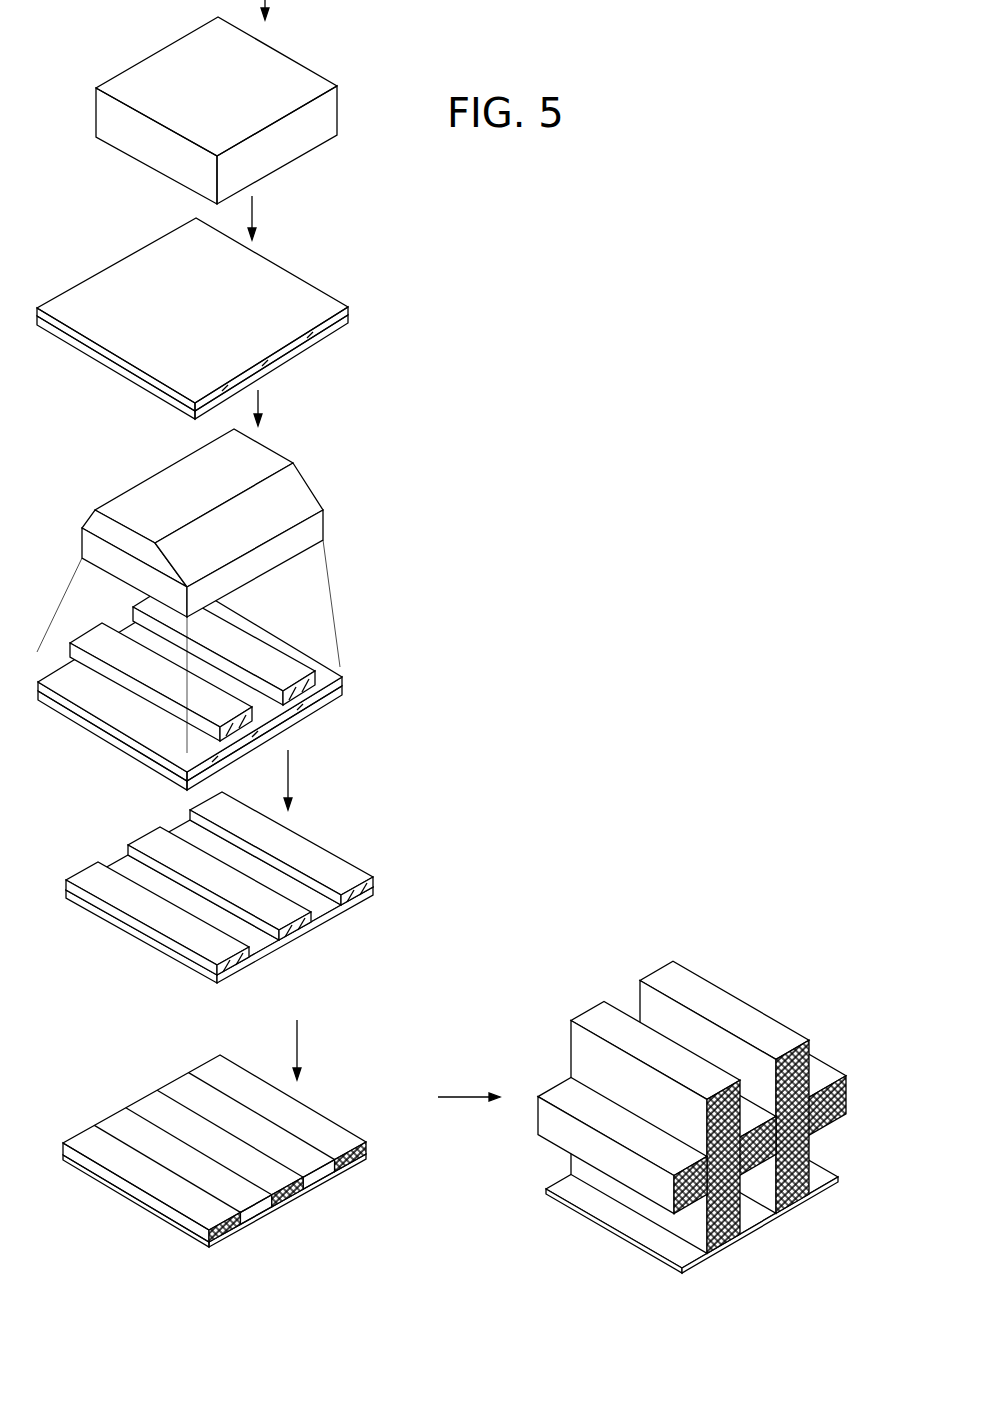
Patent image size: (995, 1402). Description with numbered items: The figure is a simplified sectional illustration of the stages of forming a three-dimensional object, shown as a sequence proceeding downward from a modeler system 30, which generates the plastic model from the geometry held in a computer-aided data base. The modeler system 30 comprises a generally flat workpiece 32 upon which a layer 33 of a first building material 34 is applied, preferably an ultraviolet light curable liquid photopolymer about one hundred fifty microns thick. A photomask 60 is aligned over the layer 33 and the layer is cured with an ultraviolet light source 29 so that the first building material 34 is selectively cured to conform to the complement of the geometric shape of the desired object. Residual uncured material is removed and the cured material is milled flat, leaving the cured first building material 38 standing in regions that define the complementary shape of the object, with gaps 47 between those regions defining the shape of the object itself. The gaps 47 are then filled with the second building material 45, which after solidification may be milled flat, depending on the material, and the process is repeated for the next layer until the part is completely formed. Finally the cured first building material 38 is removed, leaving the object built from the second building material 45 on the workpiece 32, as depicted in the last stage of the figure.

The modeler system 30 is at (317, 125).
The first building material 34 is at (350, 299).
The layer 33 is at (350, 313).
The workpiece 32 is at (297, 350).
The ultraviolet light source 29 is at (302, 505).
The photomask 60 is at (285, 675).
The cured first building material 38 is at (338, 878).
The gaps 47 is at (318, 905).
The second building material 45 is at (310, 1158).